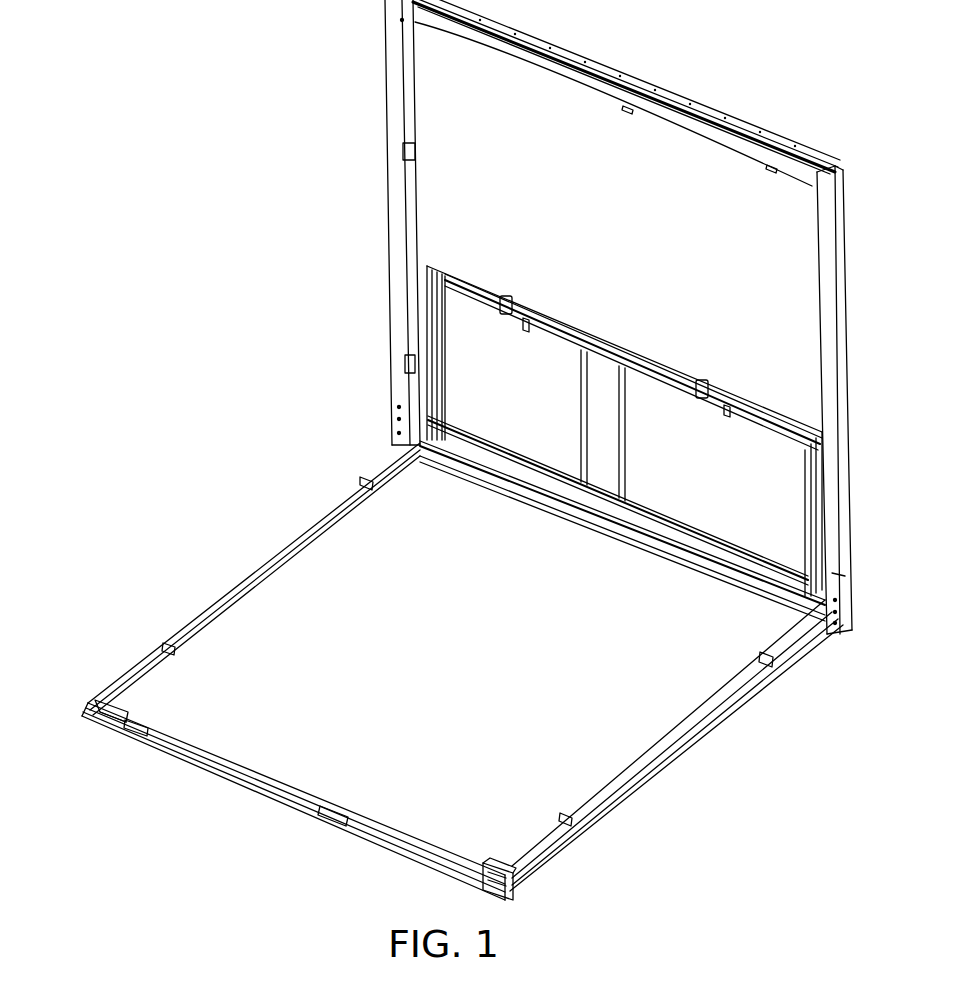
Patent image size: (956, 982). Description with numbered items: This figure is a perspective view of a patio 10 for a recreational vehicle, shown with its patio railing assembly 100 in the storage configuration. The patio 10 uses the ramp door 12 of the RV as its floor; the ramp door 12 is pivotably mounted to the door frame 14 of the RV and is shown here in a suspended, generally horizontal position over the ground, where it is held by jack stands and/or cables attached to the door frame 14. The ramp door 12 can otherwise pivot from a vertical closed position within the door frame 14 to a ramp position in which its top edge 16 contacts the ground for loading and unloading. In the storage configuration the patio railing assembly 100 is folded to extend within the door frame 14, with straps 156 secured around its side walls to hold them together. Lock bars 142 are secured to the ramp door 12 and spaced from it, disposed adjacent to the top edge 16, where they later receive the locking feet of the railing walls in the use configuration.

The patio 10 is at (258, 73).
The ramp door 12 is at (224, 651).
The door frame 14 is at (613, 82).
The top edge 16 is at (196, 768).
The patio railing assembly 100 is at (613, 327).
The lock bar 142 is at (113, 703).
The strap 156 is at (509, 296).